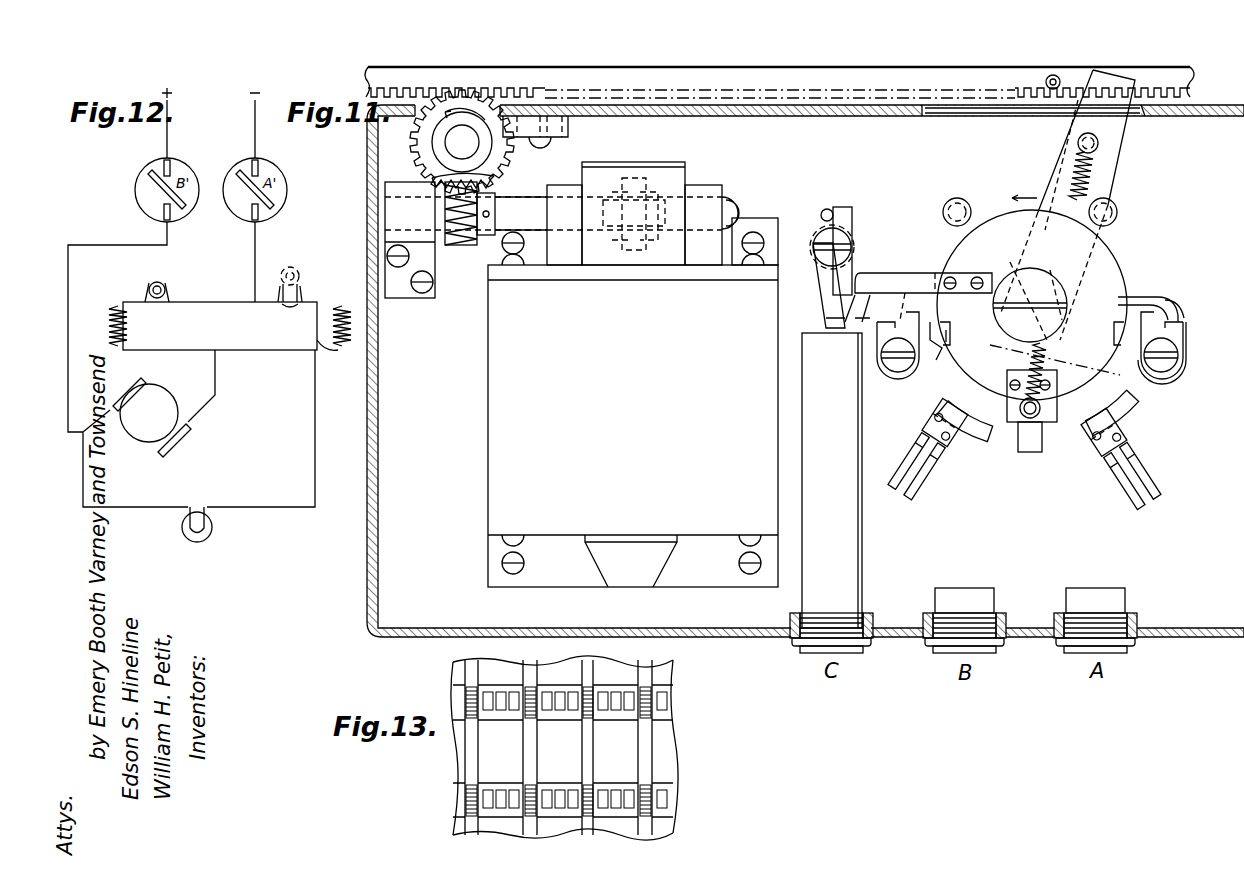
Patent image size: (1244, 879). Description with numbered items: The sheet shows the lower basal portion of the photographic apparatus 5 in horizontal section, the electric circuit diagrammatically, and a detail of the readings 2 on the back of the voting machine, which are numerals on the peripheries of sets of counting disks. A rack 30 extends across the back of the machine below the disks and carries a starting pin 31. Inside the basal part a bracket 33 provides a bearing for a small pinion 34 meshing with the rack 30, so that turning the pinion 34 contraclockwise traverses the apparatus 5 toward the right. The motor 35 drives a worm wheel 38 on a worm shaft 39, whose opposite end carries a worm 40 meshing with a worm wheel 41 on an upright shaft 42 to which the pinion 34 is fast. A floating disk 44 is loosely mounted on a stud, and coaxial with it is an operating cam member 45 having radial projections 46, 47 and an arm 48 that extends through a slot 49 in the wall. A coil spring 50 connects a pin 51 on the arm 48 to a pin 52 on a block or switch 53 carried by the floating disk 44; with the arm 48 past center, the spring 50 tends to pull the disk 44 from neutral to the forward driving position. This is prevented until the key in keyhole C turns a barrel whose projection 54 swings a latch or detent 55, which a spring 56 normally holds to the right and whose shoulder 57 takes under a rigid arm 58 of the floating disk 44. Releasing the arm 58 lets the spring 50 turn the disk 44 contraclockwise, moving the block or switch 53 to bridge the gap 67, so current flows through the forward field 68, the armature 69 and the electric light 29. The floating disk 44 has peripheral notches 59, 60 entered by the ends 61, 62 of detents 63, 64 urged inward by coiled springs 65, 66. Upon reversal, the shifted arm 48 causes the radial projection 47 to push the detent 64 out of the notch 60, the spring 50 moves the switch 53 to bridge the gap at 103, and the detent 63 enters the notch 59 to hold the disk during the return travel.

In FIG. 13, the readings 2 is at (445, 695).
In FIG. 11, the photographic apparatus 5 is at (367, 440).
In FIG. 12, the electric light 29 is at (213, 528).
In FIG. 11, the rack 30 is at (1198, 78).
In FIG. 11, the starting pin 31 is at (1046, 78).
In FIG. 11, the bracket 33 is at (570, 127).
In FIG. 11, the pinion 34 is at (496, 162).
In FIG. 11, the motor 35 is at (633, 409).
In FIG. 11, the worm wheel 38 is at (637, 176).
In FIG. 11, the worm shaft 39 is at (734, 210).
In FIG. 11, the worm 40 is at (458, 246).
In FIG. 11, the worm wheel 41 is at (440, 180).
In FIG. 11, the upright shaft 42 is at (466, 144).
In FIG. 11, the floating disk 44 is at (1110, 276).
In FIG. 11, the operating cam member 45 is at (1010, 268).
In FIG. 11, the radial projection 46 is at (960, 279).
In FIG. 11, the radial projection 47 is at (1093, 366).
In FIG. 11, the arm 48 is at (1066, 160).
In FIG. 11, the slot 49 is at (1012, 112).
In FIG. 11, the coil spring 50 is at (1095, 178).
In FIG. 11, the pin 51 is at (1098, 144).
In FIG. 11, the pin 52 is at (1032, 454).
In FIG. 11, the block or switch 53 is at (1047, 400).
In FIG. 12, the block or switch 53 is at (300, 263).
In FIG. 11, the projection 54 is at (852, 333).
In FIG. 11, the latch or detent 55 is at (826, 306).
In FIG. 11, the spring 56 is at (826, 236).
In FIG. 11, the shoulder 57 is at (865, 308).
In FIG. 11, the rigid arm 58 is at (870, 276).
In FIG. 11, the peripheral notch 59 is at (938, 350).
In FIG. 11, the peripheral notch 60 is at (1156, 372).
In FIG. 11, the detent end 61 is at (932, 285).
In FIG. 11, the detent end 62 is at (1138, 309).
In FIG. 11, the detent 63 is at (900, 292).
In FIG. 11, the detent 64 is at (1168, 308).
In FIG. 11, the coiled spring 65 is at (898, 379).
In FIG. 11, the coiled spring 66 is at (1176, 370).
In FIG. 11, the gap 67 is at (1125, 446).
In FIG. 12, the gap 67 is at (291, 315).
In FIG. 12, the forward field 68 is at (345, 348).
In FIG. 12, the armature 69 is at (162, 396).
In FIG. 11, the gap 103 is at (960, 458).